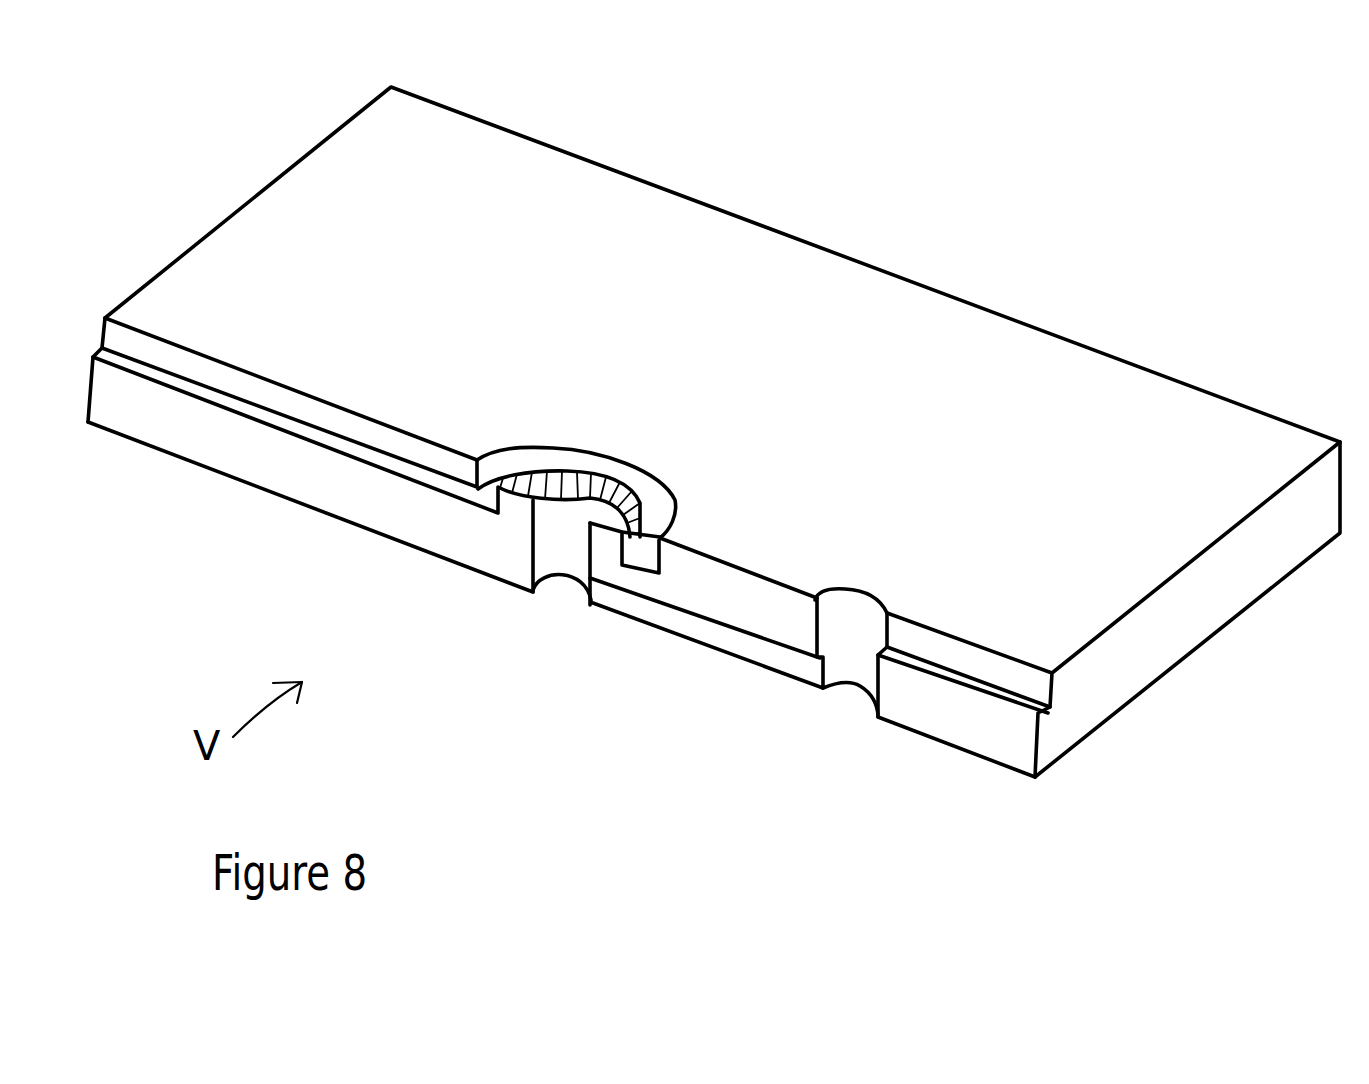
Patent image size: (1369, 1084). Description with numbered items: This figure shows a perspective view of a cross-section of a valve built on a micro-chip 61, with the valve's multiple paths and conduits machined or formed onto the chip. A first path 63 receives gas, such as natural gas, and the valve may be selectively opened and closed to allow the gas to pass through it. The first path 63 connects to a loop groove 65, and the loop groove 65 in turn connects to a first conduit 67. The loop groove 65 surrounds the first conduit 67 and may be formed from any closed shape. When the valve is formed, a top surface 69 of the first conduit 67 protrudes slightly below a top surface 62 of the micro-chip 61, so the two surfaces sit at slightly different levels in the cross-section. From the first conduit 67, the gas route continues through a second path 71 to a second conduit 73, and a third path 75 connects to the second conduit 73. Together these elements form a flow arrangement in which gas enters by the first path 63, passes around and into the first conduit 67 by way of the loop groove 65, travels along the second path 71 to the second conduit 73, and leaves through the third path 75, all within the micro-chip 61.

The micro-chip 61 is at (873, 292).
The top surface of the micro-chip 62 is at (487, 427).
The first path 63 is at (230, 400).
The loop groove 65 is at (645, 557).
The first conduit 67 is at (562, 557).
The top surface of the first conduit 69 is at (532, 502).
The second path 71 is at (723, 643).
The second conduit 73 is at (860, 658).
The third path 75 is at (972, 673).